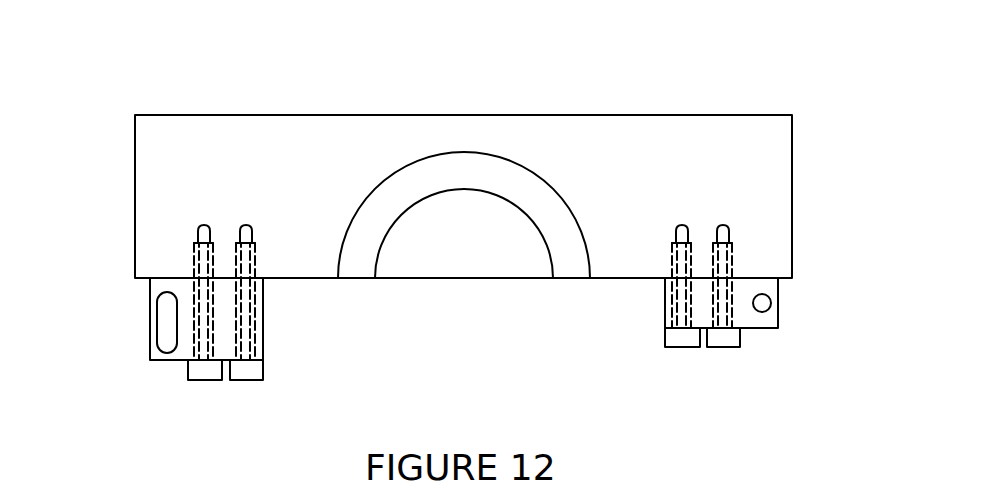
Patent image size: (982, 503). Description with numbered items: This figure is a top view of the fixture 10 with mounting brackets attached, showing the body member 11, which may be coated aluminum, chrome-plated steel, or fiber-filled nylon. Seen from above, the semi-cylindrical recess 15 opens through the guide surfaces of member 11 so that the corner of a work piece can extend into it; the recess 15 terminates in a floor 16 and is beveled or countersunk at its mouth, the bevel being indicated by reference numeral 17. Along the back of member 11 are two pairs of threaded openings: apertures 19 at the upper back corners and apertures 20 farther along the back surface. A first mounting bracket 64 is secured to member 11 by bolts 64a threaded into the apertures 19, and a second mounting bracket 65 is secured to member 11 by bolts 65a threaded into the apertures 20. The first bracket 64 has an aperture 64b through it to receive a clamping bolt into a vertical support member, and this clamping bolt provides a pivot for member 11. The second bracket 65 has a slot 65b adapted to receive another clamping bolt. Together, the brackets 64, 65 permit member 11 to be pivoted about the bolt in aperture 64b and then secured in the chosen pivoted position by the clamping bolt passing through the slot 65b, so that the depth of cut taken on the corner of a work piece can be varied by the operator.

The connector assembly 10 is at (479, 239).
The body member 11 is at (795, 248).
The semi-cylindrical recess 15 is at (391, 238).
The floor 16 is at (484, 262).
The bevel 17 is at (414, 186).
The threaded apertures 19 is at (682, 222).
The threaded apertures 20 is at (245, 220).
The first mounting bracket 64 is at (789, 349).
The bolts 64a is at (723, 353).
The aperture 64b is at (773, 311).
The second mounting bracket 65 is at (156, 364).
The bolts 65a is at (246, 386).
The slot 65b is at (158, 353).